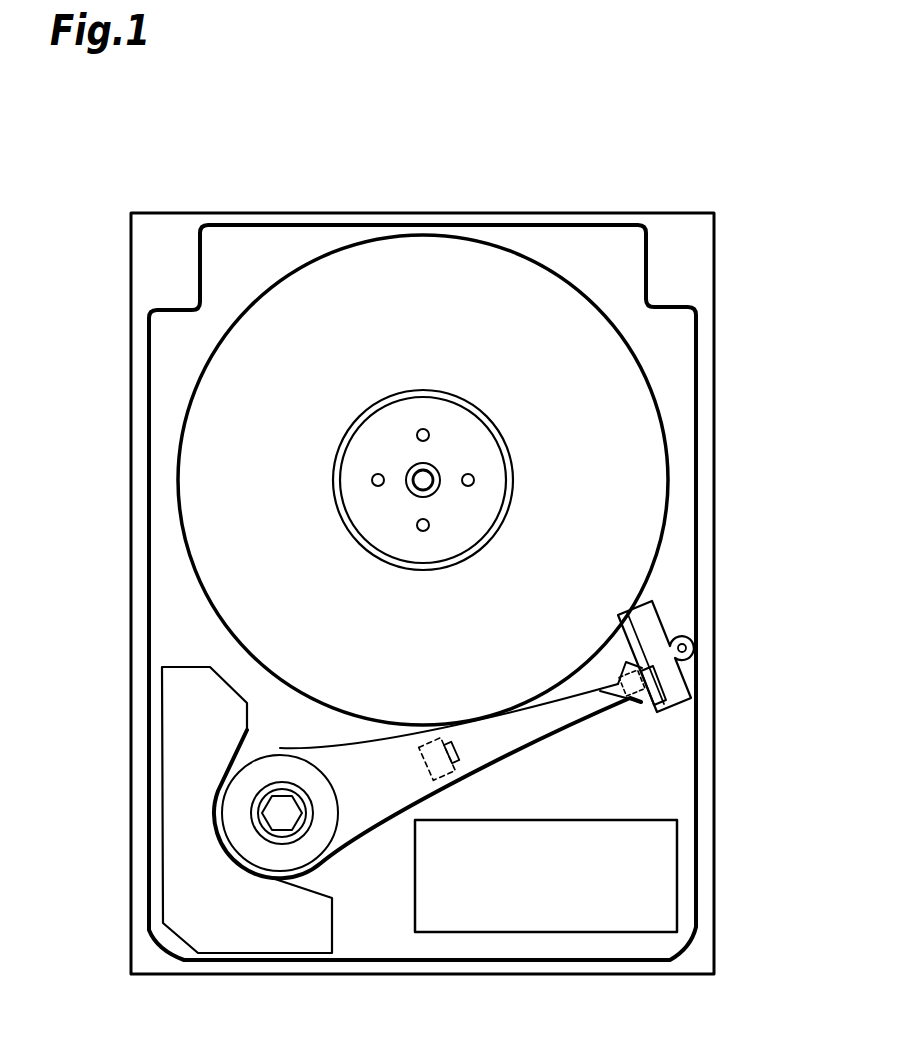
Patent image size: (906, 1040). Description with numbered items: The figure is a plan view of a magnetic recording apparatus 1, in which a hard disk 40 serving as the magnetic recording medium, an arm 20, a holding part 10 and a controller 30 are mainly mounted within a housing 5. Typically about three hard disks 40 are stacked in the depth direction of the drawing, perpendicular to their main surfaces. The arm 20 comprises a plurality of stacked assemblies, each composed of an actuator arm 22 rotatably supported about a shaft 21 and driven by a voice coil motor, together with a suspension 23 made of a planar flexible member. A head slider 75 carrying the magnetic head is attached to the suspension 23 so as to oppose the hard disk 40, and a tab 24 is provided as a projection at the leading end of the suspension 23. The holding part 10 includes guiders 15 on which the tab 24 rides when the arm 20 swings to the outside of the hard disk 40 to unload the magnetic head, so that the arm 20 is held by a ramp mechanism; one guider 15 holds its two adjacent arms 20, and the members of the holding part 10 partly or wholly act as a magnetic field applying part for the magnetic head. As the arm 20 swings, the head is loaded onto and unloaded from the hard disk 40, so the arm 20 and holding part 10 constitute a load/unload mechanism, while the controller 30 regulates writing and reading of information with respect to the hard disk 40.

The magnetic recording apparatus 1 is at (461, 190).
The housing 5 is at (157, 240).
The holding part 10 is at (628, 621).
The guider 15 is at (624, 617).
The arm 20 is at (512, 753).
The shaft 21 is at (289, 815).
The actuator arm 22 is at (413, 785).
The suspension 23 is at (583, 707).
The tab 24 is at (652, 676).
The controller 30 is at (571, 892).
The hard disk 40 is at (612, 494).
The head slider 75 is at (622, 672).